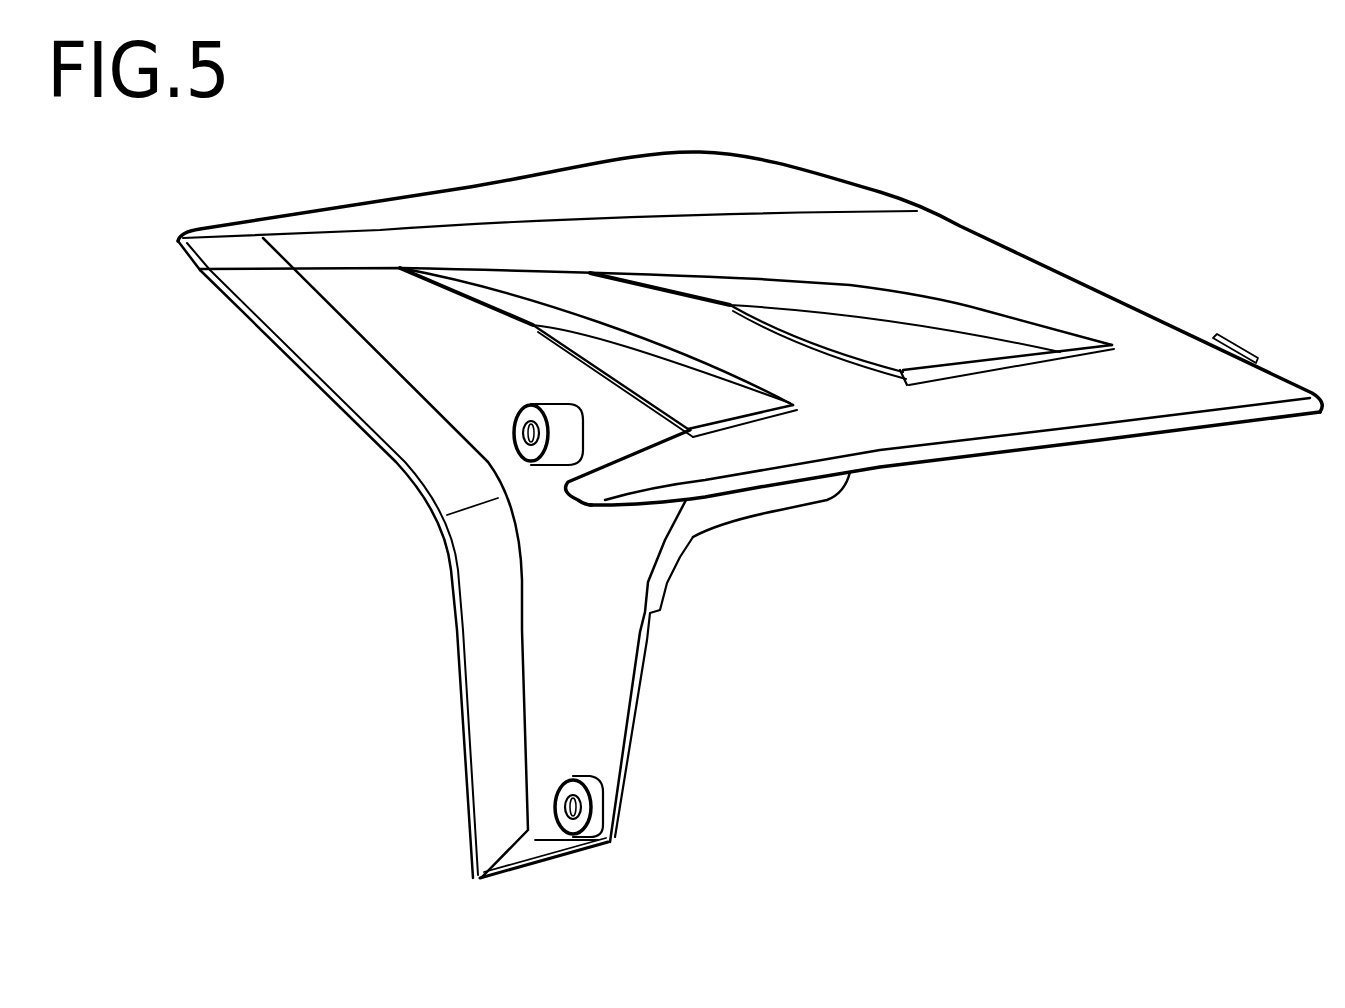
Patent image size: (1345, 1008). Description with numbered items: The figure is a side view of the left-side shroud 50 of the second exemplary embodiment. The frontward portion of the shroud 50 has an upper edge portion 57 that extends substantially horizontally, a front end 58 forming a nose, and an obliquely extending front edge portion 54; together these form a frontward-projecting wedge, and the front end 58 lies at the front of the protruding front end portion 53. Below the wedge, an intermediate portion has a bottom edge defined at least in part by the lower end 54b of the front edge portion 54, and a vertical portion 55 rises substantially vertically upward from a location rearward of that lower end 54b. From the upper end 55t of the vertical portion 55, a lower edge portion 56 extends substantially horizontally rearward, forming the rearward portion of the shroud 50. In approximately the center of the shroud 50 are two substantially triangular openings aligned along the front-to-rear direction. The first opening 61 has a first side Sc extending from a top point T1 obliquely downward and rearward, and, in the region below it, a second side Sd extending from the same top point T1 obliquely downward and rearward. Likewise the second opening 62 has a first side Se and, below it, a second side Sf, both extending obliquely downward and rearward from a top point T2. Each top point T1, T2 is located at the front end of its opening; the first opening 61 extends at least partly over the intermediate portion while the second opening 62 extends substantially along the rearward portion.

The shroud 50 is at (1102, 233).
The front end portion 53 is at (165, 247).
The front edge portion 54 is at (357, 436).
The lower end 54b is at (478, 878).
The vertical portion 55 is at (645, 671).
The upper end 55t is at (688, 505).
The lower edge portion 56 is at (1029, 452).
The upper edge portion 57 is at (554, 170).
The front end 58 is at (176, 241).
The first opening 61 is at (703, 409).
The second opening 62 is at (930, 351).
The top point T1 is at (532, 323).
The top point T2 is at (731, 304).
The first side Sc is at (667, 350).
The second side Sd is at (636, 399).
The first side Se is at (905, 320).
The second side Sf is at (860, 354).